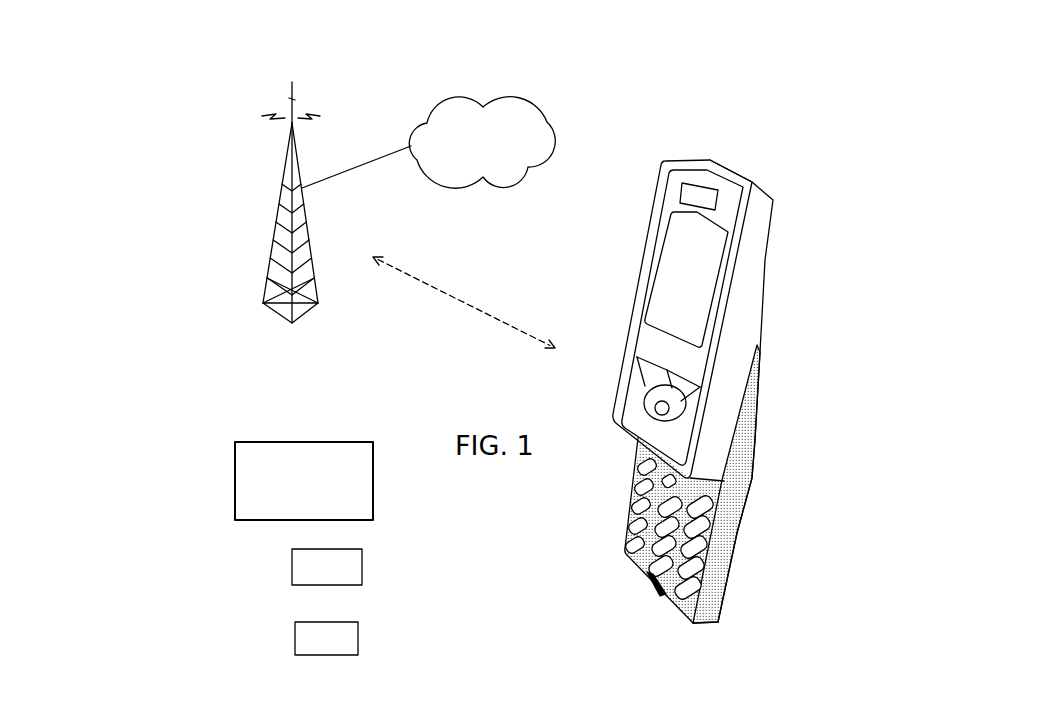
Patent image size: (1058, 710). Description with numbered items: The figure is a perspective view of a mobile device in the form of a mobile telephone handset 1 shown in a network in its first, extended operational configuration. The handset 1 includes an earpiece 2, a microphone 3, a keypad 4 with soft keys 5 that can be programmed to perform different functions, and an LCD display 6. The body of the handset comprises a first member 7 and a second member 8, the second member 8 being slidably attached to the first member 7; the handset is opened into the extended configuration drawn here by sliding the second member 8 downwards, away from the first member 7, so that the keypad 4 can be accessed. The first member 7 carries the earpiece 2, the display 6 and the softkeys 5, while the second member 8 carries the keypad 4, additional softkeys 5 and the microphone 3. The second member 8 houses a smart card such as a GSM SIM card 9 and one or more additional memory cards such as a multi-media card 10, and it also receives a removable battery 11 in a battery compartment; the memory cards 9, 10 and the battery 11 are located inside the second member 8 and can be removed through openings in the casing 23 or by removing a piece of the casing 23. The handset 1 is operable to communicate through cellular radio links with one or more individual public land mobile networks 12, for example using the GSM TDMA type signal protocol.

The mobile telephone handset 1 is at (843, 48).
The earpiece 2 is at (693, 192).
The microphone 3 is at (589, 602).
The keypad 4 is at (723, 570).
The soft keys 5 is at (657, 400).
The LCD display 6 is at (638, 274).
The first member 7 is at (713, 440).
The second member 8 is at (727, 503).
The GSM SIM card 9 is at (247, 576).
The multi-media card 10 is at (234, 645).
The battery 11 is at (223, 481).
The public land mobile network 12 is at (440, 142).
The casing 23 is at (774, 484).